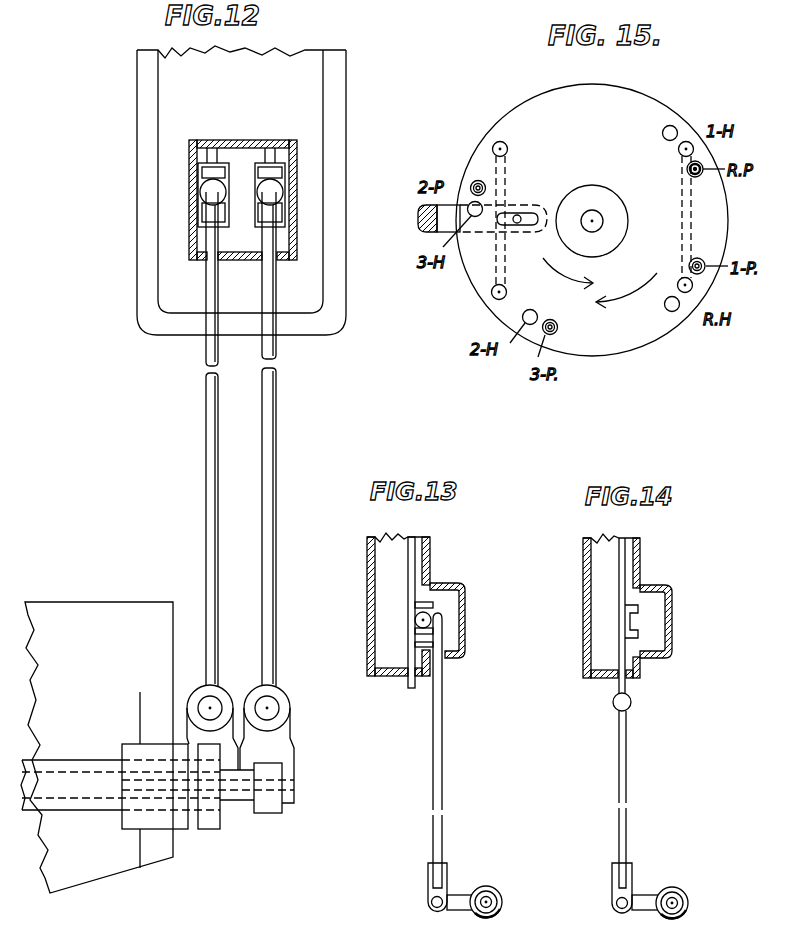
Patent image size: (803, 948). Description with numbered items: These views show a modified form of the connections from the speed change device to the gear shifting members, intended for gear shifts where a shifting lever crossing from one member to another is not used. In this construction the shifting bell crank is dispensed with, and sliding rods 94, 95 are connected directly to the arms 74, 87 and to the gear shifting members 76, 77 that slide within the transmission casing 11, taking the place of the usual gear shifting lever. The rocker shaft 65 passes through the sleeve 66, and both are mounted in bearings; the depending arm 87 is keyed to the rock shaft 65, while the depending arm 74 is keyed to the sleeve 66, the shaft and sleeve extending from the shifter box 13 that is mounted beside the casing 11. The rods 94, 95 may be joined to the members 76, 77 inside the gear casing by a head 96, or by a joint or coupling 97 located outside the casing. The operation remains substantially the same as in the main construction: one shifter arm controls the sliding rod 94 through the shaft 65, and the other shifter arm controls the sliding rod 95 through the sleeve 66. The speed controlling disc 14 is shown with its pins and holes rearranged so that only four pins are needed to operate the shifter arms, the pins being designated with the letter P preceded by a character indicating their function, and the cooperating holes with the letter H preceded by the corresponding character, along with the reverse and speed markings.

In FIG. 12, the transmission casing 11 is at (307, 93).
In FIG. 13, the transmission casing 11 is at (428, 570).
In FIG. 14, the transmission casing 11 is at (642, 577).
In FIG. 12, the shifter box 13 is at (70, 618).
In FIG. 15, the disc 14 is at (633, 106).
In FIG. 12, the rocker shaft 65 is at (240, 793).
In FIG. 12, the sleeve 66 is at (58, 767).
In FIG. 12, the depending arm 74 is at (213, 826).
In FIG. 13, the depending arm 74 is at (505, 902).
In FIG. 14, the depending arm 74 is at (690, 887).
In FIG. 12, the gear shifting member 76 is at (212, 157).
In FIG. 12, the gear shifting member 77 is at (272, 157).
In FIG. 12, the depending arm 87 is at (268, 787).
In FIG. 13, the depending arm 87 is at (458, 898).
In FIG. 14, the depending arm 87 is at (642, 898).
In FIG. 12, the sliding rod 94 is at (268, 440).
In FIG. 13, the sliding rod 94 is at (443, 728).
In FIG. 14, the sliding rod 94 is at (627, 783).
In FIG. 12, the sliding rod 95 is at (208, 450).
In FIG. 12, the head 96 is at (291, 184).
In FIG. 13, the head 96 is at (428, 618).
In FIG. 14, the joint or coupling 97 is at (632, 700).